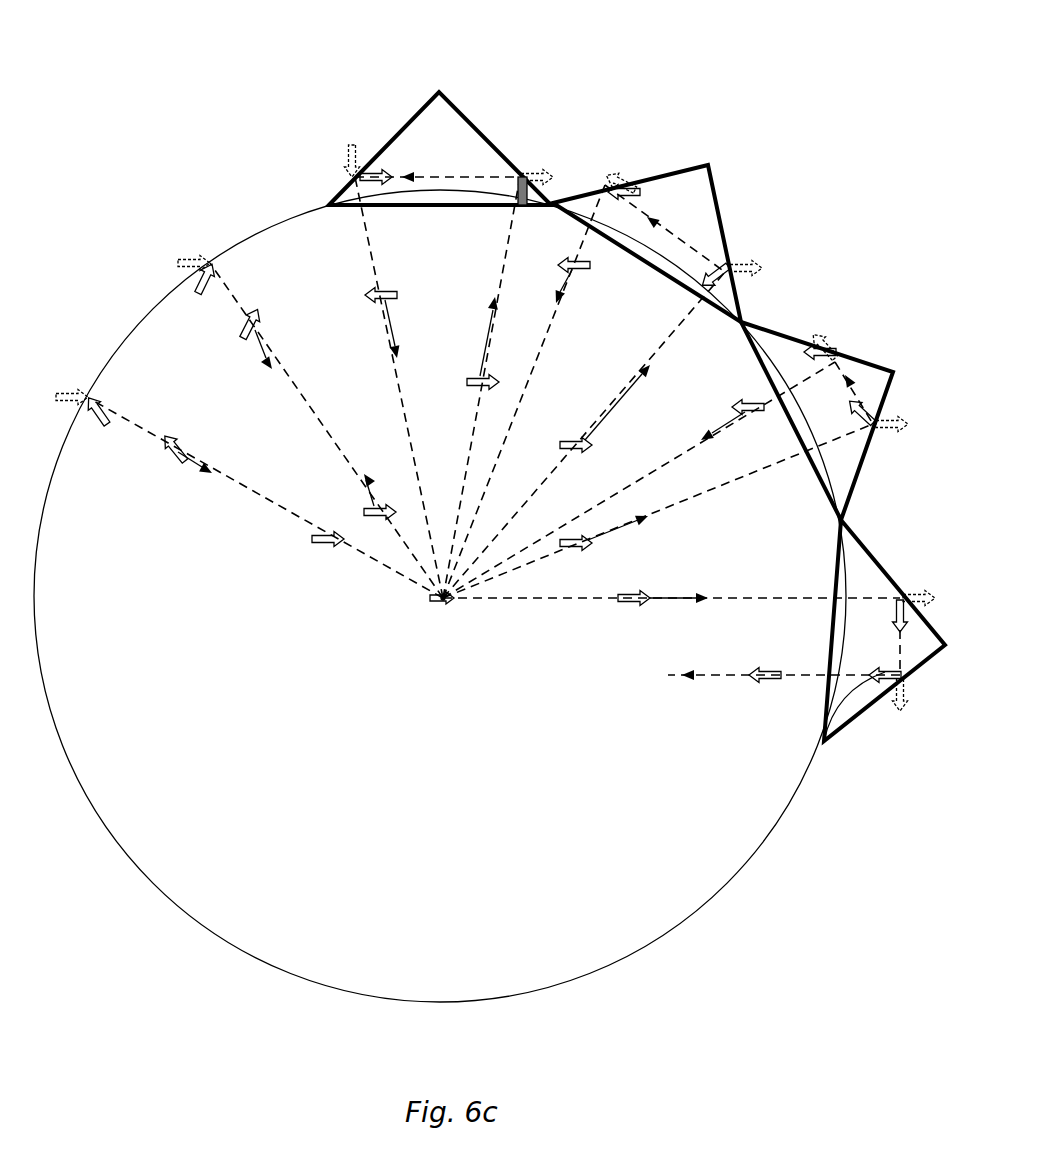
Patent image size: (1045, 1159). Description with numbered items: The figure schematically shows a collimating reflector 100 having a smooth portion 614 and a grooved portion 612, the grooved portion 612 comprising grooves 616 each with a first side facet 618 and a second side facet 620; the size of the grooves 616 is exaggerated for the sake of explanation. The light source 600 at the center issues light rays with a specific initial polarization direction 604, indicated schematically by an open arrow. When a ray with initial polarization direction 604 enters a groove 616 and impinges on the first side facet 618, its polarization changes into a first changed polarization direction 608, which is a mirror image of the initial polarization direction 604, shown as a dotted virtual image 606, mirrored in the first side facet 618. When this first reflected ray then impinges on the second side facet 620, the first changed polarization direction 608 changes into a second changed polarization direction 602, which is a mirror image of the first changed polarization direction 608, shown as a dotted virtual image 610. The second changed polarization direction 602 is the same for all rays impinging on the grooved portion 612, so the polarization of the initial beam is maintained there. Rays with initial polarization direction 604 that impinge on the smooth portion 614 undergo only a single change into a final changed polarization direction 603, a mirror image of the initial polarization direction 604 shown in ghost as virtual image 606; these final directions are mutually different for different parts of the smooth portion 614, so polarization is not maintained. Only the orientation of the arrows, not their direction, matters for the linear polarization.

The collimating reflector 100 is at (262, 142).
The light source 600 is at (433, 602).
The second changed polarization direction 602 is at (762, 680).
The final changed polarization direction 603 is at (168, 450).
The initial polarization direction 604 is at (332, 545).
The virtual image 606 is at (928, 598).
The first changed polarization direction 608 is at (927, 600).
The virtual image 610 is at (893, 703).
The grooved portion 612 is at (743, 325).
The smooth portion 614 is at (120, 352).
The groove 616 is at (685, 202).
The first side facet 618 is at (723, 232).
The second side facet 620 is at (614, 192).